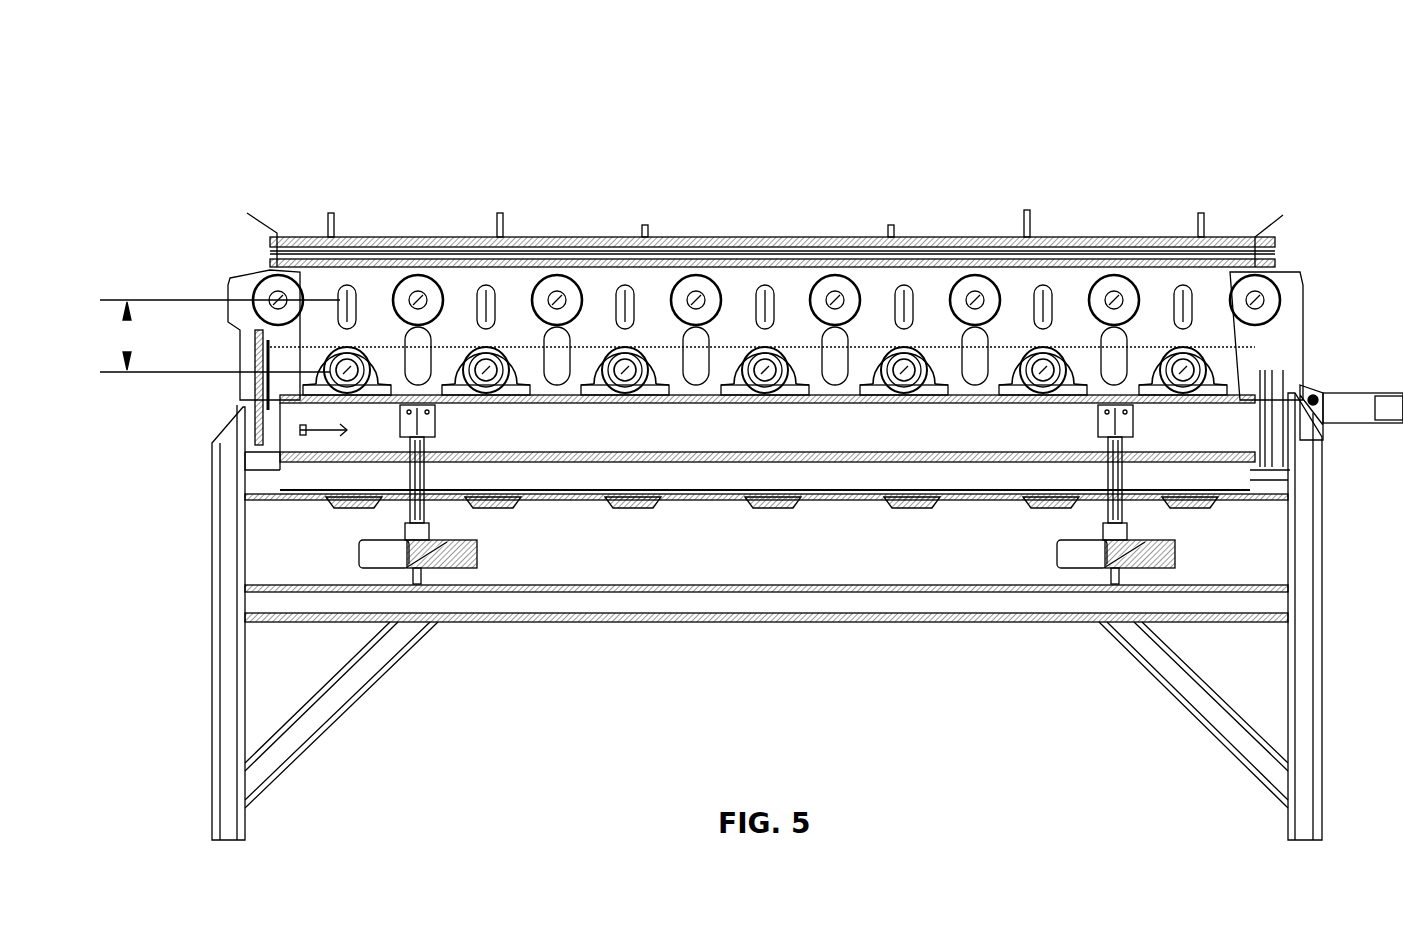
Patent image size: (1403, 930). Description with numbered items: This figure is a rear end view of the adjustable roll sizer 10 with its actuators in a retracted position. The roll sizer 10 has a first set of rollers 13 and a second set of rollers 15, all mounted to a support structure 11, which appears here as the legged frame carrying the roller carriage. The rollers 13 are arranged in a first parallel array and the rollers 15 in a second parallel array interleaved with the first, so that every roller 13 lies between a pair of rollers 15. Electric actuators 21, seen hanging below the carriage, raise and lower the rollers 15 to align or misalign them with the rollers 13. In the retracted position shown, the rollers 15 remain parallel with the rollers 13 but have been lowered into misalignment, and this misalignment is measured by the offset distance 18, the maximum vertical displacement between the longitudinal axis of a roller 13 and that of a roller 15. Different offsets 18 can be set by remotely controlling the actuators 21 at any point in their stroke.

The adjustable roll sizer 10 is at (800, 50).
The support structure 11 is at (1275, 790).
The rollers 13 is at (682, 103).
The rollers 15 is at (360, 350).
The offset distance 18 is at (127, 372).
The electric actuators 21 is at (359, 555).